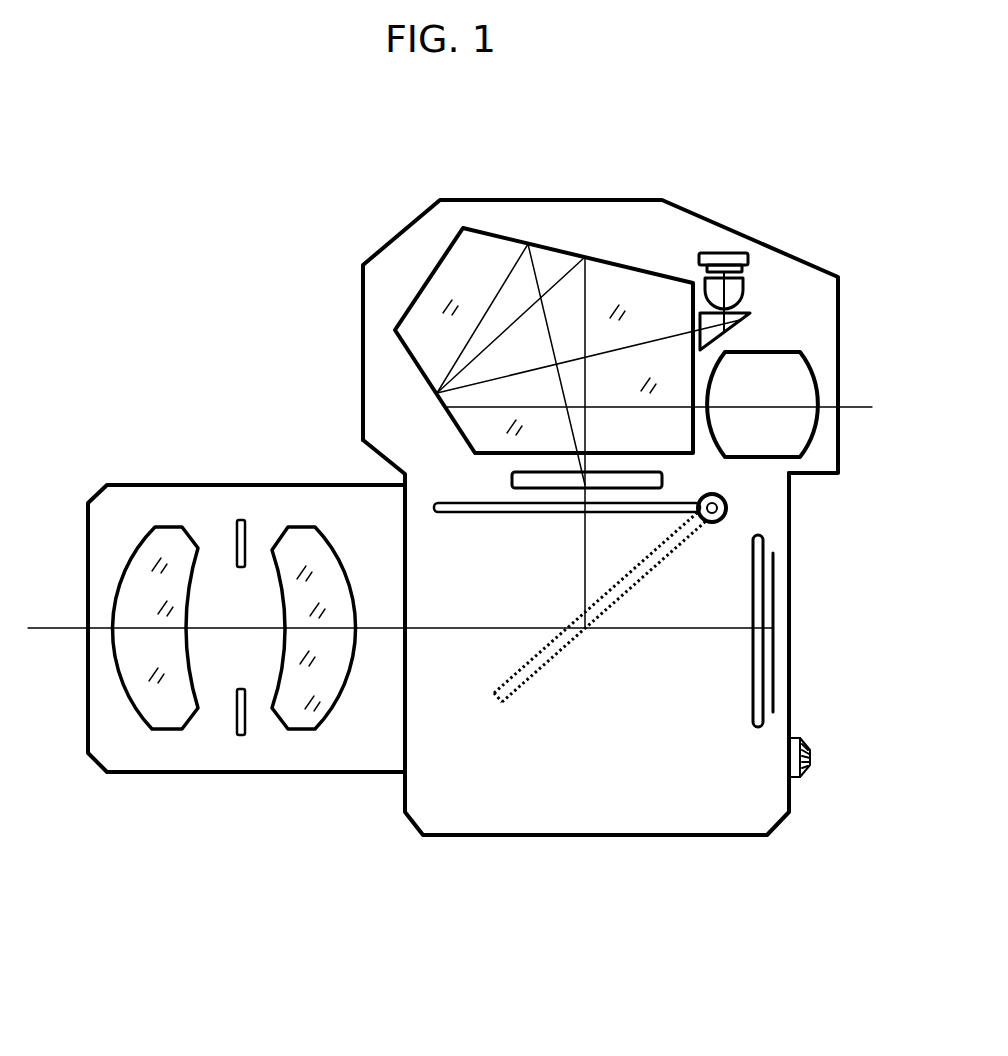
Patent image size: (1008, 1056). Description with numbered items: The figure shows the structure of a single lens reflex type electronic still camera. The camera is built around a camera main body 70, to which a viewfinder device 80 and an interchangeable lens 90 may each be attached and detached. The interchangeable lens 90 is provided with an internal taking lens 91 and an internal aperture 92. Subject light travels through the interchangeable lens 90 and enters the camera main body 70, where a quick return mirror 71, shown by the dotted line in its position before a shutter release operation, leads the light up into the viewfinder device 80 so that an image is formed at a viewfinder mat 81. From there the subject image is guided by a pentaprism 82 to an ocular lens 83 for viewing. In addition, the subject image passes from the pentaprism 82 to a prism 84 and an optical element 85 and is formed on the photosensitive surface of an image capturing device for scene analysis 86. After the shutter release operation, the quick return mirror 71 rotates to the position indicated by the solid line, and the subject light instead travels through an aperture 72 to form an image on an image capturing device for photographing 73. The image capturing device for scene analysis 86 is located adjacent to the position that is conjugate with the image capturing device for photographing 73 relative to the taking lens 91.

The camera main body 70 is at (565, 812).
The quick return mirror 71 is at (527, 676).
The aperture 72 is at (765, 540).
The image capturing device for photographing 73 is at (773, 655).
The viewfinder device 80 is at (567, 200).
The viewfinder mat 81 is at (510, 480).
The pentaprism 82 is at (430, 353).
The ocular lens 83 is at (795, 428).
The prism 84 is at (738, 321).
The optical element 85 is at (735, 292).
The image capturing device for scene analysis 86 is at (727, 257).
The interchangeable lens 90 is at (345, 764).
The taking lens 91 is at (303, 533).
The aperture 92 is at (240, 735).